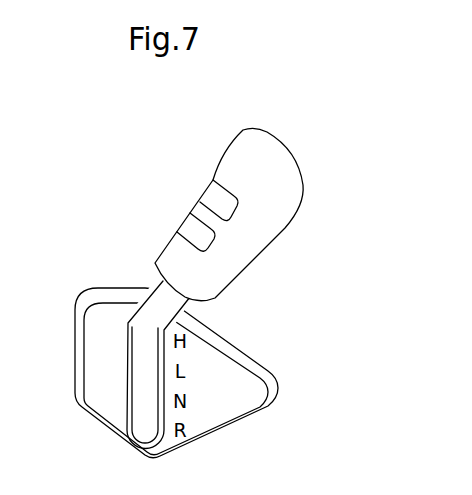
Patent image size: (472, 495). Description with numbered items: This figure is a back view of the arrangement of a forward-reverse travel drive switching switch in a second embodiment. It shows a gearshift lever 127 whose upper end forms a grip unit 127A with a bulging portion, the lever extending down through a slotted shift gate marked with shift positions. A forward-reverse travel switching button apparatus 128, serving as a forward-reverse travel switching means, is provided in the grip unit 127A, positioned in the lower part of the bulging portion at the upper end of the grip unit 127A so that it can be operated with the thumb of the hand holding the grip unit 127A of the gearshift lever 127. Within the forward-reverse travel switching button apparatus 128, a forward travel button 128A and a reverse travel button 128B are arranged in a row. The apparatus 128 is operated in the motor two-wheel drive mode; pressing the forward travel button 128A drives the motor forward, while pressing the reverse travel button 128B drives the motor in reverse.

The gearshift lever 127 is at (313, 157).
The grip unit 127A is at (243, 253).
The forward-reverse travel switching button apparatus 128 is at (93, 153).
The forward travel button 128A is at (213, 193).
The reverse travel button 128B is at (191, 231).